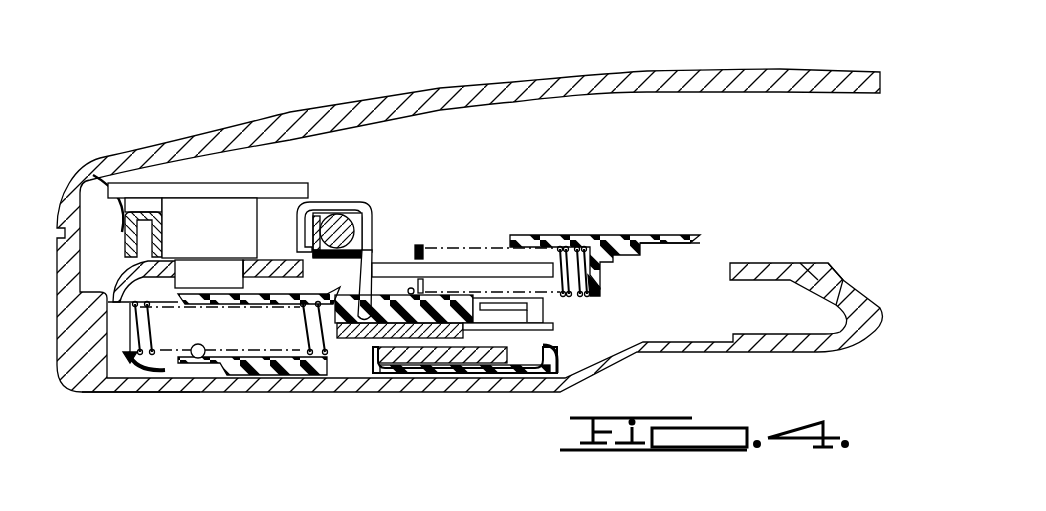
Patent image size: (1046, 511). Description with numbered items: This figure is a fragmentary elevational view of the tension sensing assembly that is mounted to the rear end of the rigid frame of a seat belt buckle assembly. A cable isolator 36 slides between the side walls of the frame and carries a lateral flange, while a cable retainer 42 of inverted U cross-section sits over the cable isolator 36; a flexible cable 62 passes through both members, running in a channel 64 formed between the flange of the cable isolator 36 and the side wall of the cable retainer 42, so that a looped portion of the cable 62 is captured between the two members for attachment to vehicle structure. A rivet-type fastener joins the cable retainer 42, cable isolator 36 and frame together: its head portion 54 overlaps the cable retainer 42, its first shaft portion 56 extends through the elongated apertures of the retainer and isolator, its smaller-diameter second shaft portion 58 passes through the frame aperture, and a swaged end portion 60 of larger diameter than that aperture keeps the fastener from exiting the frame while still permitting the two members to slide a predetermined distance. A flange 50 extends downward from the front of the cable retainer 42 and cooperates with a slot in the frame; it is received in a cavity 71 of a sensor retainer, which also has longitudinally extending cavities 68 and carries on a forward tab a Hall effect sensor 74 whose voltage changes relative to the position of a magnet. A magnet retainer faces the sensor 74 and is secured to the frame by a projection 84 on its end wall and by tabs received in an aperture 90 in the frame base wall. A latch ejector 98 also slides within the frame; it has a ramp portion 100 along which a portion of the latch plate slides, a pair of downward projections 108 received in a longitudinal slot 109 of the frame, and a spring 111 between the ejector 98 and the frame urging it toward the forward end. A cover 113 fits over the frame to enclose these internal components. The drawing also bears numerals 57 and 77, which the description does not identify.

The cable isolator 36 is at (83, 170).
The pivot boss 57 is at (100, 177).
The head portion 54 is at (267, 187).
The first shaft portion 56 is at (180, 223).
The second shaft portion 58 is at (203, 268).
The cable retainer 42 is at (322, 202).
The flexible cable 62 is at (340, 218).
The channel 64 is at (370, 263).
The flange 50 is at (400, 278).
The longitudinal slot 109 is at (507, 267).
The spring 111 is at (423, 247).
The pin 77 is at (375, 263).
The latch ejector 98 is at (593, 233).
The ramp portion 100 is at (673, 233).
The projections 108 is at (600, 278).
The cavity 71 is at (372, 265).
The sensor 74 is at (543, 315).
The aperture 90 is at (410, 353).
The swaged end portion 60 is at (224, 331).
The cavities 68 is at (197, 358).
The projection 84 is at (123, 328).
The cover 113 is at (128, 383).